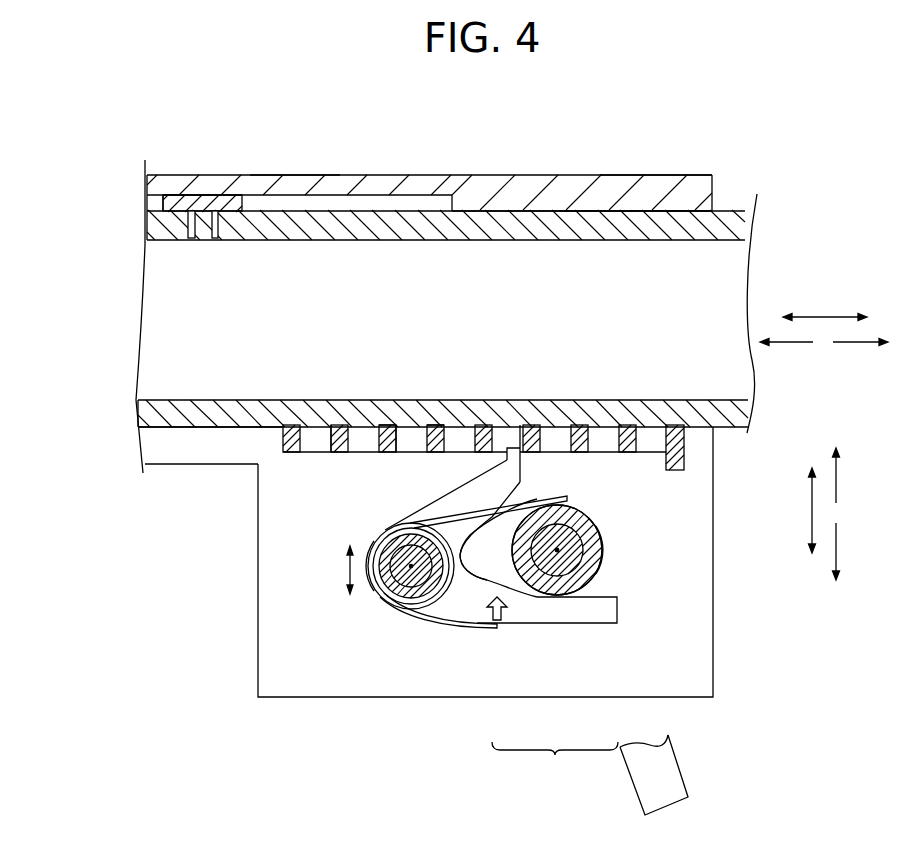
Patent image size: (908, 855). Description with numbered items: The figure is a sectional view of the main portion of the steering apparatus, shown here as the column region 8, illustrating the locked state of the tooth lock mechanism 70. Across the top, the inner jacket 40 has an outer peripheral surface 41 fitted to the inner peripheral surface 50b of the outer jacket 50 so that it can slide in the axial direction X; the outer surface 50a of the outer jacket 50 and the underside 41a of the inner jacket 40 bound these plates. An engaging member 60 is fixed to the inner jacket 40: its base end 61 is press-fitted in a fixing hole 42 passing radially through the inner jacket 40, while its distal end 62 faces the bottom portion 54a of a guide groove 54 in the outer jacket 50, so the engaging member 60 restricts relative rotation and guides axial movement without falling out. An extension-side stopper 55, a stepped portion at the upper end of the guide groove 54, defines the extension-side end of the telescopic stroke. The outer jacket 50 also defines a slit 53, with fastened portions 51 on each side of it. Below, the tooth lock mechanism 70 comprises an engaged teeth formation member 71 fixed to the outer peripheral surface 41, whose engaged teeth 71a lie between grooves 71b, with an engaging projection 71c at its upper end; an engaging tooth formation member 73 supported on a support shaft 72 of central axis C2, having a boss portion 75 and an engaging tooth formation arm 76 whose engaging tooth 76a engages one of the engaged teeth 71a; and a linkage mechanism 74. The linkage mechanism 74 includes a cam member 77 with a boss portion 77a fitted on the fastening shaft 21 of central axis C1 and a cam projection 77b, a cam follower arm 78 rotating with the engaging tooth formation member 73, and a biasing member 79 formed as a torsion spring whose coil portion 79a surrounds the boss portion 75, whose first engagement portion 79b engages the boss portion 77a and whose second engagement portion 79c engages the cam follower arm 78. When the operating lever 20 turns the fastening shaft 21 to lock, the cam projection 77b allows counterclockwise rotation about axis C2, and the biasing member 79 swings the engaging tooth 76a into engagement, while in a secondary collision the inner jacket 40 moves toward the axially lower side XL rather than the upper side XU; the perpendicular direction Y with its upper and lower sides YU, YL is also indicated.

The steering column 8 is at (625, 150).
The operating lever 20 is at (670, 781).
The fastening shaft 21 is at (565, 528).
The inner jacket 40 is at (732, 205).
The outer peripheral surface 41 is at (538, 210).
The lower surface of support plate 41a is at (186, 428).
The fixing hole 42 is at (178, 233).
The outer jacket 50 is at (569, 168).
The upper surface of plate 50a is at (678, 173).
The inner peripheral surface 50b is at (622, 212).
The fastened portions 51 is at (300, 680).
The slit 53 is at (223, 457).
The guide groove 54 is at (342, 202).
The bottom portion 54a is at (305, 183).
The extension-side stopper 55 is at (450, 207).
The engaging member 60 is at (181, 188).
The base end 61 is at (206, 240).
The distal end 62 is at (205, 202).
The tooth lock mechanism 70 is at (389, 627).
The engaged teeth formation member 71 is at (292, 460).
The engaged teeth 71a is at (383, 428).
The grooves 71b is at (442, 430).
The engaging projection 71c is at (677, 470).
The support shaft 72 is at (410, 588).
The engaging tooth formation member 73 is at (382, 520).
The linkage mechanism 74 is at (555, 762).
The boss portion 75 is at (385, 582).
The engaging tooth formation arm 76 is at (432, 505).
The engaging tooth 76a is at (507, 447).
The cam member 77 is at (589, 593).
The boss portion 77a is at (601, 572).
The cam projection 77b is at (487, 582).
The cam follower arm 78 is at (547, 615).
The biasing member 79 is at (494, 636).
The coil portion 79a is at (372, 585).
The first engagement portion 79b is at (548, 497).
The second engagement portion 79c is at (477, 634).
The central axis C1 is at (560, 550).
The central axis C2 is at (405, 563).
The axial direction X is at (827, 313).
The axially lower side XL is at (800, 345).
The X upper direction XU is at (855, 345).
The Y direction Y is at (810, 510).
The Y upper direction YU is at (838, 485).
The Y lower direction YL is at (838, 537).